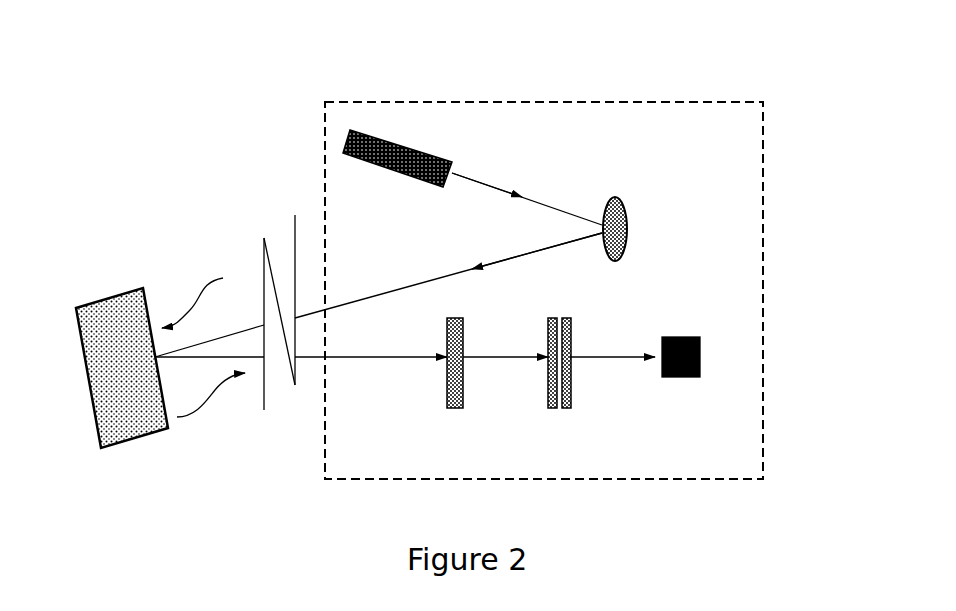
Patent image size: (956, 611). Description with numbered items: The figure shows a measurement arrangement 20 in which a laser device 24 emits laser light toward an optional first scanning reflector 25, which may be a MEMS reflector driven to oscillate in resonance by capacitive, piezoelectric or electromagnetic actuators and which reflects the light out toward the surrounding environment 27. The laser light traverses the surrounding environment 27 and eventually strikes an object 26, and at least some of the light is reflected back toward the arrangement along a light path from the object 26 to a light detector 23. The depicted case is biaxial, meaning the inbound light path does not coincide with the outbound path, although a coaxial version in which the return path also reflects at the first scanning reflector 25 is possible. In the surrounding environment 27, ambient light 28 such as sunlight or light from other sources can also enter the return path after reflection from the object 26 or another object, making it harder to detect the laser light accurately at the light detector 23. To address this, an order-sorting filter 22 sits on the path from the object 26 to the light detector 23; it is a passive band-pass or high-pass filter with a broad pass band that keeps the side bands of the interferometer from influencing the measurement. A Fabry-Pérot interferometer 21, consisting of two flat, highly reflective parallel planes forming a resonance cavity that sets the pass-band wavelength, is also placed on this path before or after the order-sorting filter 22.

The measurement arrangement 20 is at (624, 100).
The Fabry-Pérot interferometer 21 is at (559, 379).
The order-sorting filter 22 is at (456, 380).
The light detector 23 is at (681, 375).
The laser device 24 is at (397, 154).
The first scanning reflector 25 is at (633, 229).
The object 26 is at (122, 353).
The surrounding environment 27 is at (276, 310).
The ambient light 28 is at (203, 341).